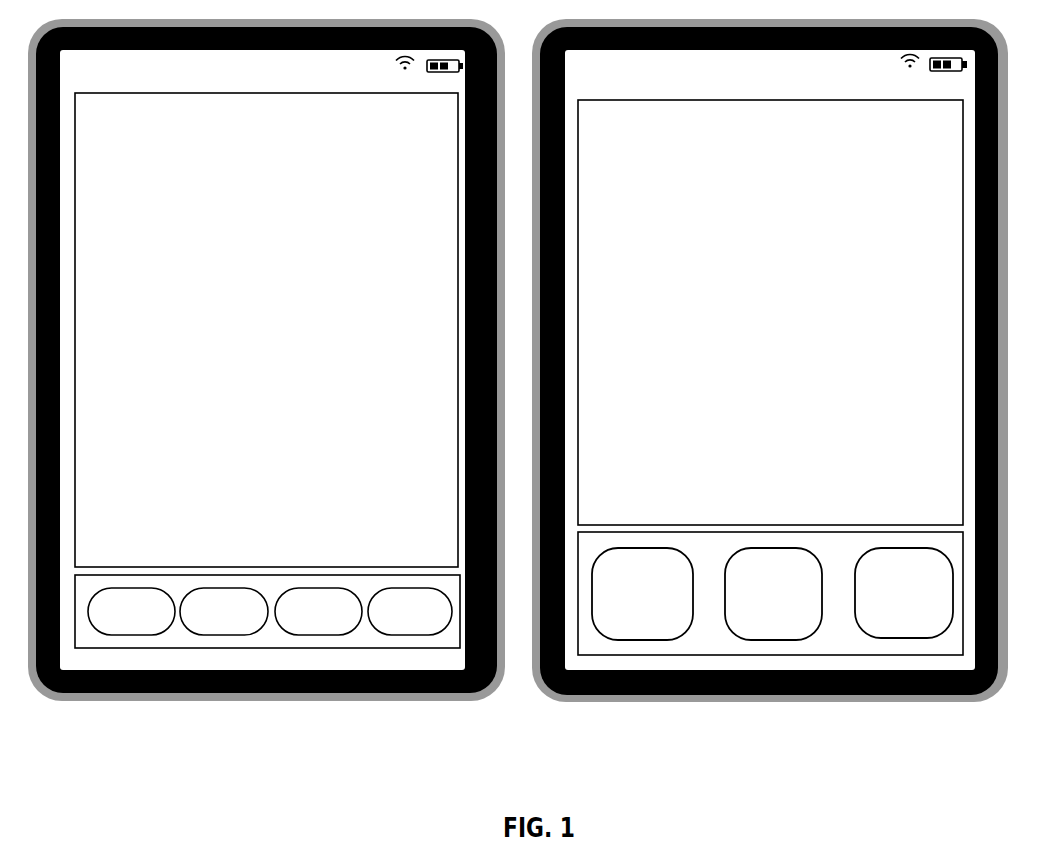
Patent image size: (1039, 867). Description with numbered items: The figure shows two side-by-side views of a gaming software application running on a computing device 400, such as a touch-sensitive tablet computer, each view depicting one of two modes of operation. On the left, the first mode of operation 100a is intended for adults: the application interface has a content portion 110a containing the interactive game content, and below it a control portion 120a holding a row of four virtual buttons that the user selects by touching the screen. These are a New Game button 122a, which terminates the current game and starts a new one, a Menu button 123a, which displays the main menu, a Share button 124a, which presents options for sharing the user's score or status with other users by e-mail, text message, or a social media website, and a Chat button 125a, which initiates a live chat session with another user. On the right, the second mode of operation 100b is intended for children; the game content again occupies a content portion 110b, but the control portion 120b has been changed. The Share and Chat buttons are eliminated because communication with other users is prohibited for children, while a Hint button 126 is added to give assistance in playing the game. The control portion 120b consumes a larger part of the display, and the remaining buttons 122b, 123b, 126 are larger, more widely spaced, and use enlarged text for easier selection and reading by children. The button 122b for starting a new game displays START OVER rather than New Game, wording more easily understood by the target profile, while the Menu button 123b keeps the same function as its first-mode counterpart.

The first mode of operation 100a is at (145, 729).
The second mode of operation 100b is at (692, 729).
The content portion 110a is at (290, 363).
The content portion 110b is at (793, 343).
The control portion 120a is at (267, 625).
The control portion 120b is at (770, 604).
The New Game button 122a is at (139, 547).
The Menu button 123a is at (229, 547).
The Share button 124a is at (317, 547).
The Chat button 125a is at (407, 547).
The button for starting a new game 122b is at (642, 503).
The Menu button 123b is at (769, 503).
The Hint button 126 is at (904, 503).
The computing device 400 is at (317, 700).